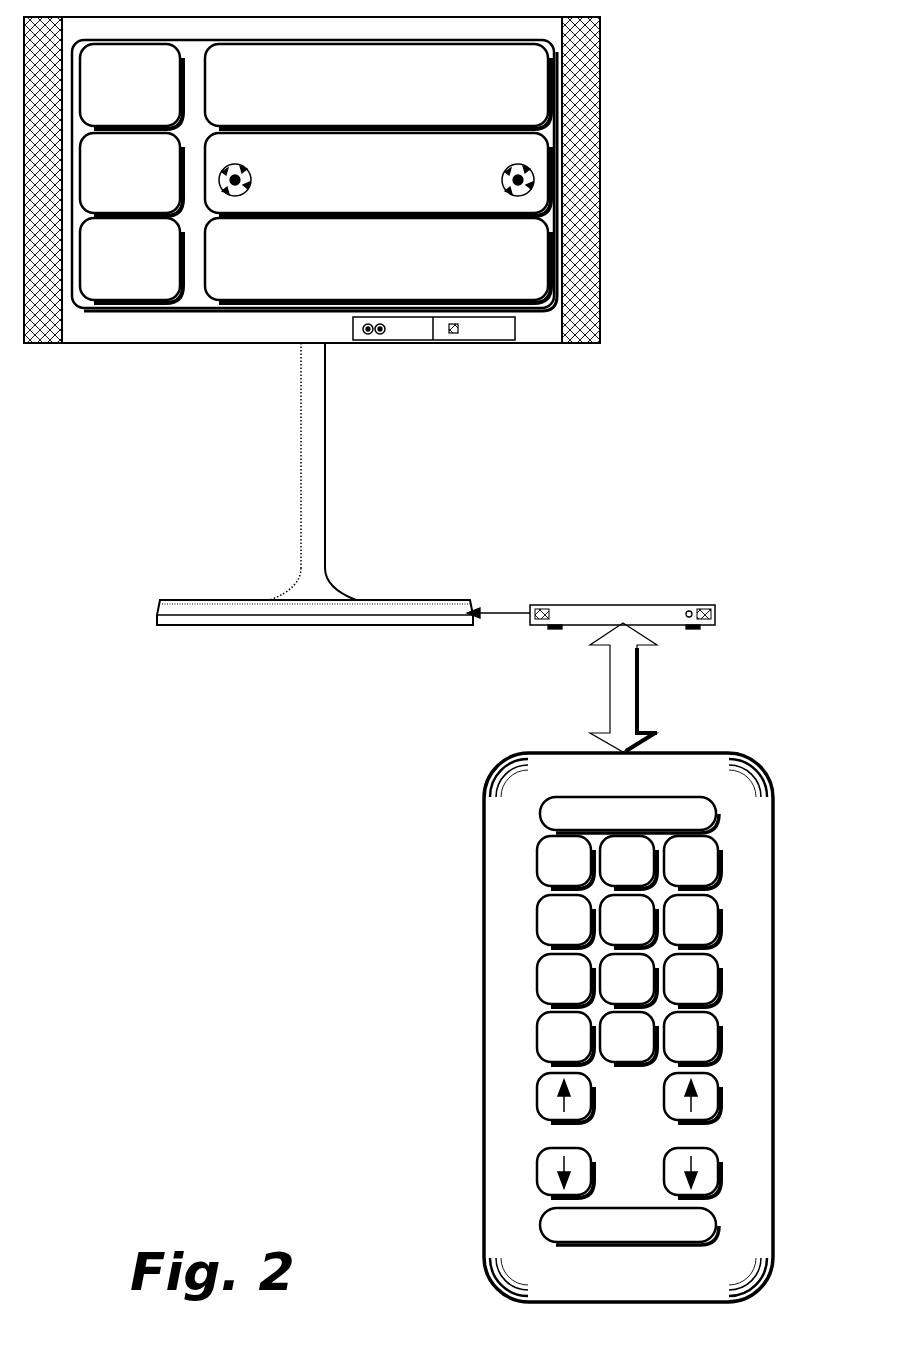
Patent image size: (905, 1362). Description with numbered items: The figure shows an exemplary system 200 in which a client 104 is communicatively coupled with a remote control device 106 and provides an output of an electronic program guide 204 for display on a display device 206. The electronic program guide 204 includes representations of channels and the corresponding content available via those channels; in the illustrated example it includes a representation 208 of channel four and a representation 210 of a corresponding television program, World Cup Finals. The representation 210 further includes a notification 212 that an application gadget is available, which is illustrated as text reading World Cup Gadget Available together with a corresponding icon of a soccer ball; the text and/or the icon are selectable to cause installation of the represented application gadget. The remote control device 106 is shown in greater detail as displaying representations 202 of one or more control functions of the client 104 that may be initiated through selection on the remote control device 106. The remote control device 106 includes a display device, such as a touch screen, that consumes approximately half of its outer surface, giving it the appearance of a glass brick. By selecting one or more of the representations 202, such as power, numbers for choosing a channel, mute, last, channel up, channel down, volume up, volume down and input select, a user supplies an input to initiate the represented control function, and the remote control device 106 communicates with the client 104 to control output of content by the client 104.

The exemplary system 200 is at (733, 48).
The display device 206 is at (596, 258).
The representation of channel 208 is at (131, 174).
The representation of television program 210 is at (444, 153).
The notification 212 is at (518, 178).
The electronic program guide 204 is at (480, 369).
The client 104 is at (714, 605).
The remote control device 106 is at (704, 752).
The representations of control functions 202 is at (547, 762).